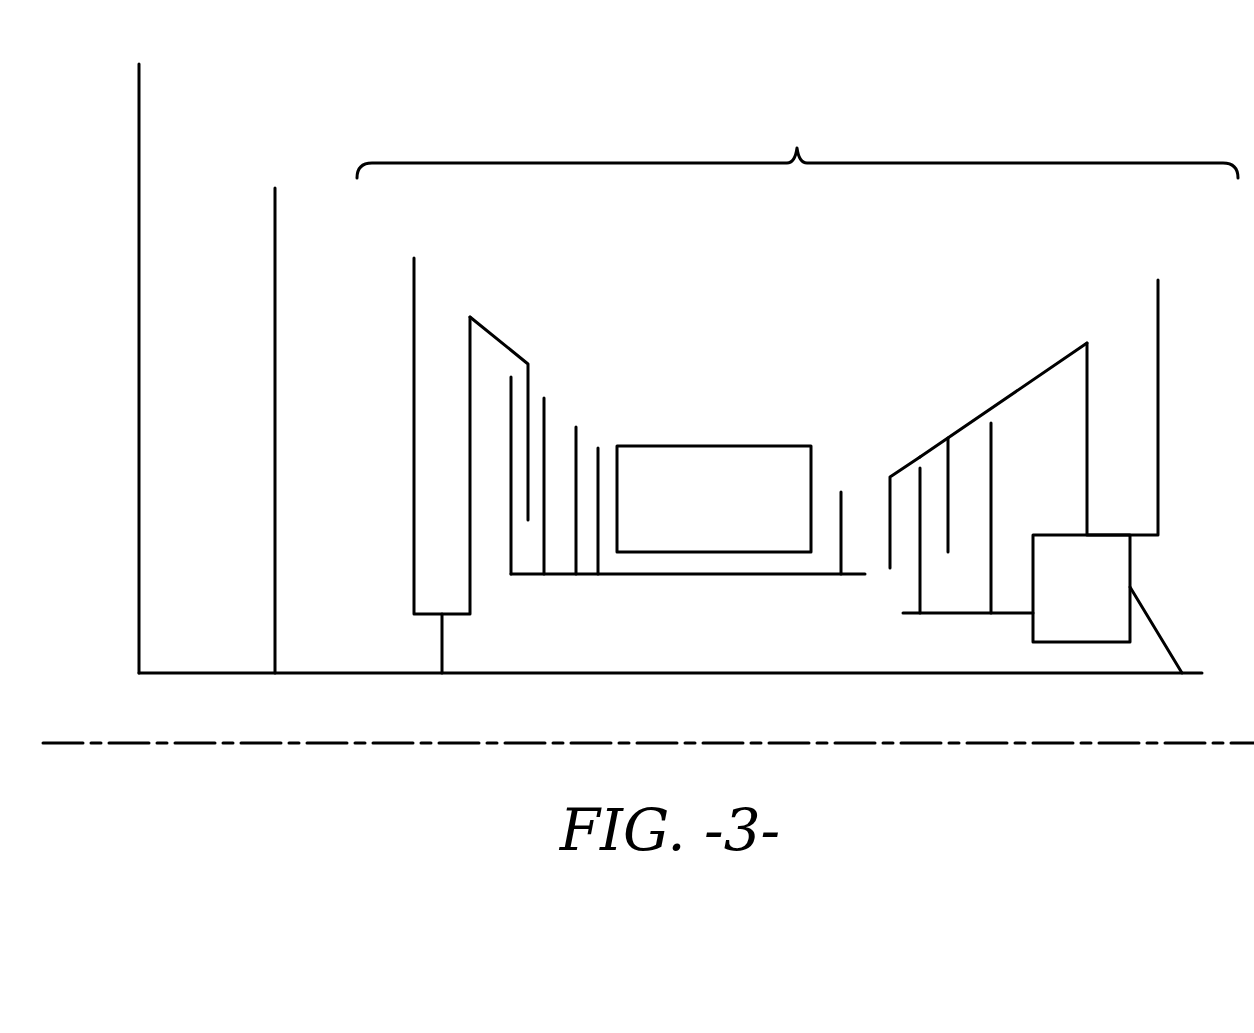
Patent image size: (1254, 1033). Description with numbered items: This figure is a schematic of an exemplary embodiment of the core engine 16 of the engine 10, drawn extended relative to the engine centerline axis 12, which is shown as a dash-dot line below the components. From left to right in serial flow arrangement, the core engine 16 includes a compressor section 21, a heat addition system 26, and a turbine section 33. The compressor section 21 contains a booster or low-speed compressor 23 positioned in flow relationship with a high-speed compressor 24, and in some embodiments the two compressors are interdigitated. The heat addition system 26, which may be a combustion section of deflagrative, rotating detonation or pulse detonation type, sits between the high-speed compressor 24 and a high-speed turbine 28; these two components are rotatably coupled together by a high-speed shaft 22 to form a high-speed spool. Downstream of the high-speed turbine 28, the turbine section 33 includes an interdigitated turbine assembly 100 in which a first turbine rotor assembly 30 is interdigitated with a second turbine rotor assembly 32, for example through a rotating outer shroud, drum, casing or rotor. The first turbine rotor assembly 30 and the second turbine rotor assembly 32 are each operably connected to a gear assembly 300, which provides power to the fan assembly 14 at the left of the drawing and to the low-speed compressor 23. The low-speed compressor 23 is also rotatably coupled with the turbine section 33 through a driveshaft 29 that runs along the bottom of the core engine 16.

The engine 10 is at (948, 102).
The engine centerline axis 12 is at (143, 743).
The fan assembly 14 is at (213, 110).
The core engine 16 is at (797, 146).
The compressor section 21 is at (542, 295).
The high-speed shaft 22 is at (722, 574).
The low-speed compressor 23 is at (445, 282).
The high-speed compressor 24 is at (561, 410).
The heat addition system 26 is at (694, 514).
The high-speed turbine 28 is at (832, 450).
The driveshaft 29 is at (663, 673).
The first turbine rotor assembly 30 is at (1005, 497).
The second turbine rotor assembly 32 is at (1103, 438).
The turbine section 33 is at (1022, 300).
The interdigitated turbine assembly 100 is at (962, 408).
The gear assembly 300 is at (1053, 602).